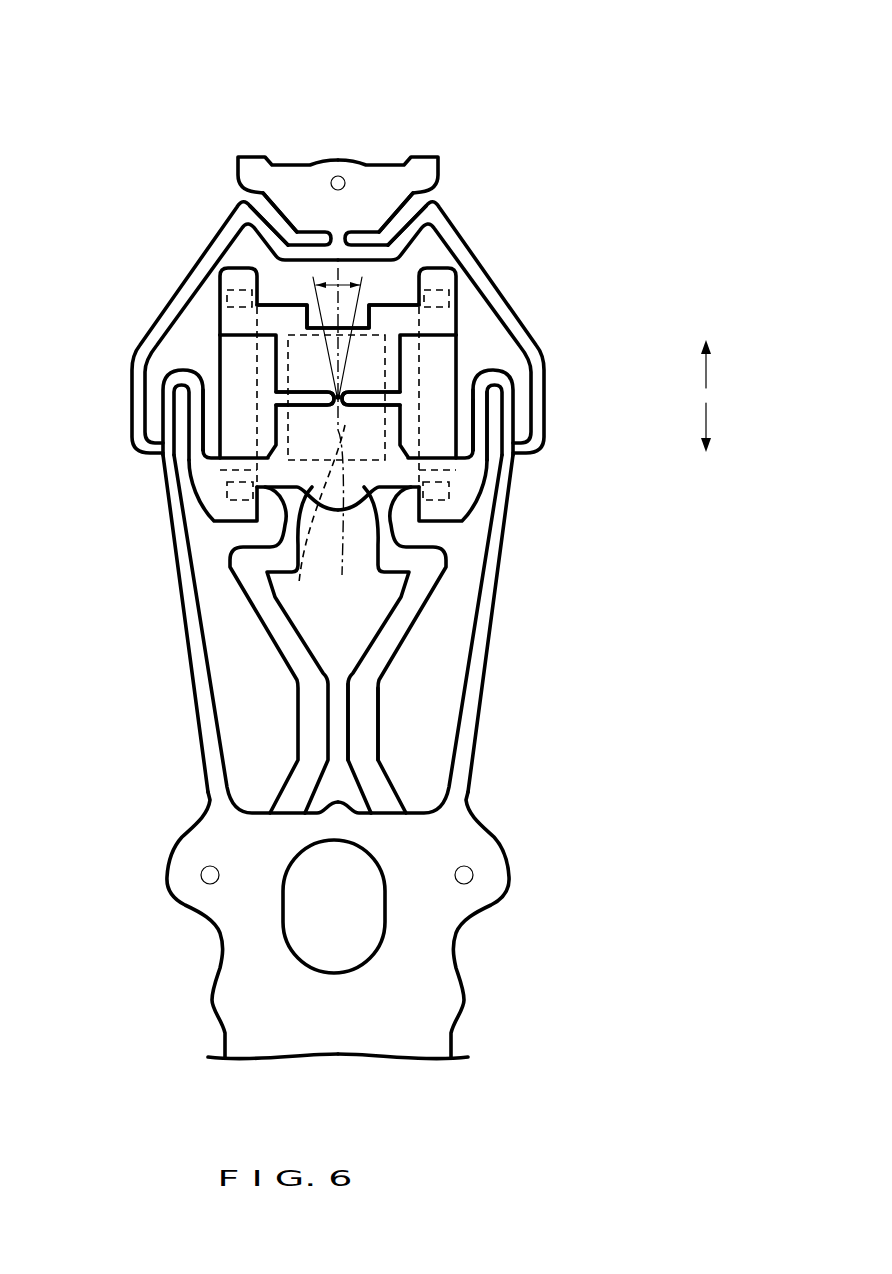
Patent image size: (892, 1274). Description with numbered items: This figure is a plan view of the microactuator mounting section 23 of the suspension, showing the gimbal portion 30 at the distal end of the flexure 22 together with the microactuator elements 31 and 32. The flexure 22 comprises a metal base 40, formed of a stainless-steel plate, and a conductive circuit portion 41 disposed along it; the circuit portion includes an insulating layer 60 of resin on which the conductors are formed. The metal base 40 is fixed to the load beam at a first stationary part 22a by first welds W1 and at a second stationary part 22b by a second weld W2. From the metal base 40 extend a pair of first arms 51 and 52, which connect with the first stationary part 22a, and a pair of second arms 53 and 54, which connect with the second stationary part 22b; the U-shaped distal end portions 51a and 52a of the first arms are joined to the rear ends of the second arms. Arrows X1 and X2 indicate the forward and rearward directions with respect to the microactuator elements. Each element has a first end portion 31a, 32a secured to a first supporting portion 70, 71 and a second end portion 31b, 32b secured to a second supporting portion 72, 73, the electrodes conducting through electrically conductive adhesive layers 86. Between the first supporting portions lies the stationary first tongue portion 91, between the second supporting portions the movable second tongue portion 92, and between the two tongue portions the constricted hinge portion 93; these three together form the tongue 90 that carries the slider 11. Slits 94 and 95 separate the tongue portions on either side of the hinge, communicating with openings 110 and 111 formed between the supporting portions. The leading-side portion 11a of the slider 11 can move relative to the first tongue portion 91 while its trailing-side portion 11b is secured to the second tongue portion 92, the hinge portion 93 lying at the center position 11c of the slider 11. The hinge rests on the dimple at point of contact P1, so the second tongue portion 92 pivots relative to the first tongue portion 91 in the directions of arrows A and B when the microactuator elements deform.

The terminal assembly 23 is at (478, 92).
The flexure 22 is at (475, 765).
The first stationary part 22a is at (430, 840).
The second stationary part 22b is at (300, 187).
The second weld W2 is at (343, 178).
The first welds W1 is at (200, 873).
The electrically conductive adhesive layer 86 is at (228, 278).
The second supporting portion 73 is at (228, 272).
The second supporting portion 72 is at (450, 265).
The second arm 54 is at (183, 280).
The second arm 53 is at (496, 285).
The second end portion 32b is at (218, 313).
The second end portion 31b is at (447, 313).
The microactuator element 32 is at (232, 358).
The microactuator element 31 is at (445, 360).
The trailing-side portion 11b is at (460, 340).
The slider 11 is at (290, 375).
The leading-side portion 11a is at (337, 430).
The center position 11c is at (313, 520).
The distal end portion 52a is at (180, 372).
The distal end portion 51a is at (492, 372).
The second tongue portion 92 is at (493, 383).
The slit 95 is at (283, 403).
The slit 94 is at (345, 399).
The point of contact P1 is at (337, 398).
The opening 111 is at (215, 437).
The opening 110 is at (508, 455).
The hinge portion 93 is at (462, 437).
The first supporting portion 71 is at (205, 472).
The first supporting portion 70 is at (492, 462).
The first tongue portion 91 is at (472, 466).
The first end portion 32a is at (215, 487).
The first end portion 31a is at (461, 487).
The gimbal portion 30 is at (218, 538).
The first arm 52 is at (200, 662).
The first arm 51 is at (485, 636).
The tongue 90 is at (383, 490).
The insulating layer 60 is at (380, 646).
The conductive circuit portion 41 is at (372, 707).
The metal base 40 is at (333, 1033).
The arrow B is at (326, 333).
The arrow A is at (360, 333).
The arrow X1 is at (706, 372).
The arrow X2 is at (706, 412).